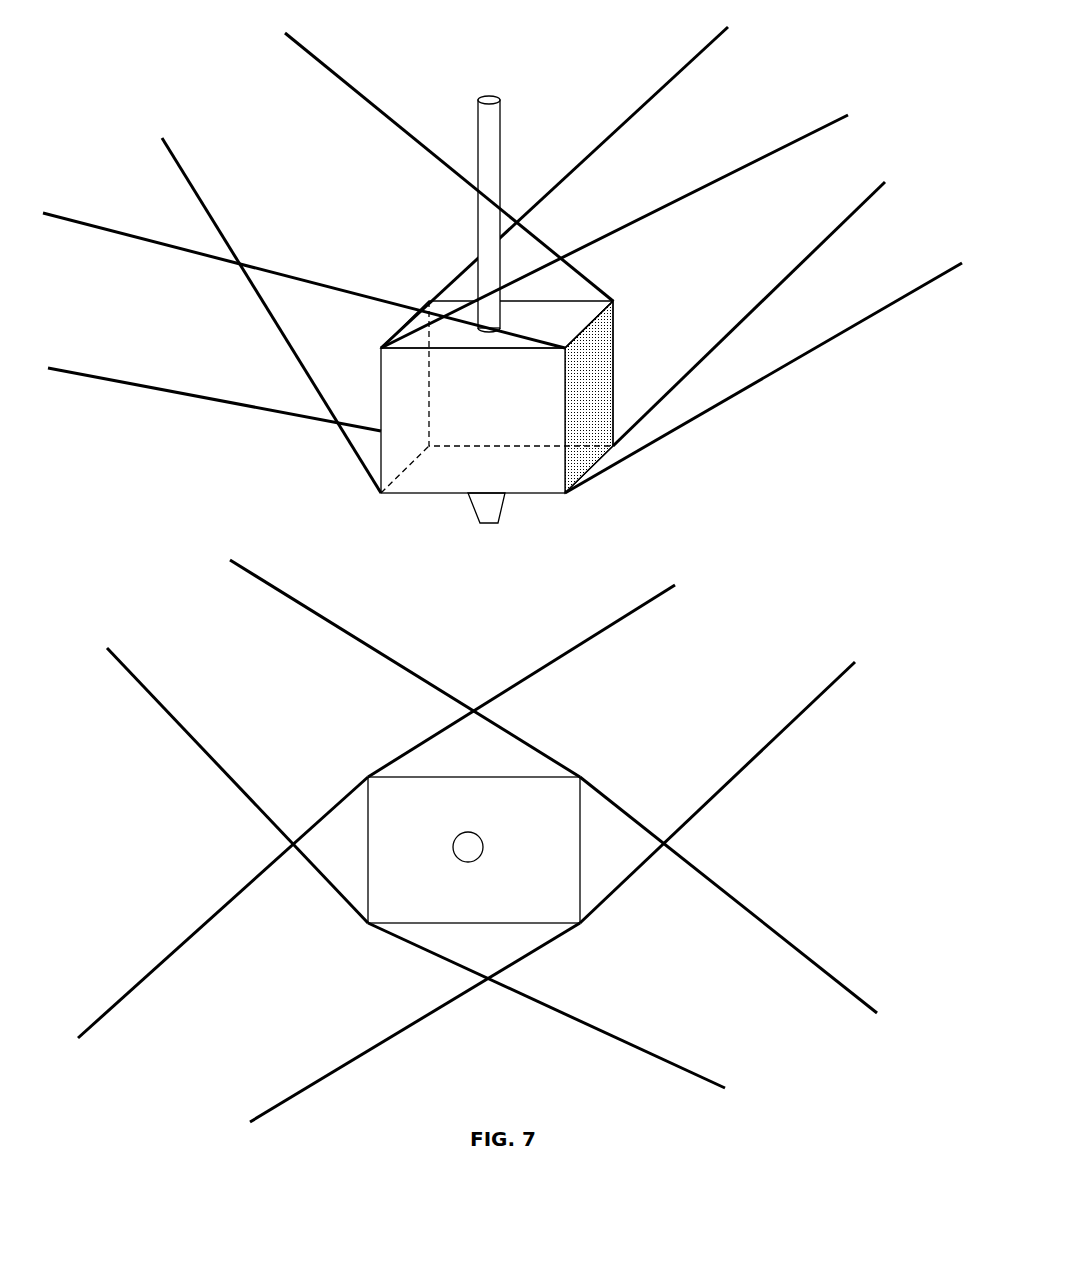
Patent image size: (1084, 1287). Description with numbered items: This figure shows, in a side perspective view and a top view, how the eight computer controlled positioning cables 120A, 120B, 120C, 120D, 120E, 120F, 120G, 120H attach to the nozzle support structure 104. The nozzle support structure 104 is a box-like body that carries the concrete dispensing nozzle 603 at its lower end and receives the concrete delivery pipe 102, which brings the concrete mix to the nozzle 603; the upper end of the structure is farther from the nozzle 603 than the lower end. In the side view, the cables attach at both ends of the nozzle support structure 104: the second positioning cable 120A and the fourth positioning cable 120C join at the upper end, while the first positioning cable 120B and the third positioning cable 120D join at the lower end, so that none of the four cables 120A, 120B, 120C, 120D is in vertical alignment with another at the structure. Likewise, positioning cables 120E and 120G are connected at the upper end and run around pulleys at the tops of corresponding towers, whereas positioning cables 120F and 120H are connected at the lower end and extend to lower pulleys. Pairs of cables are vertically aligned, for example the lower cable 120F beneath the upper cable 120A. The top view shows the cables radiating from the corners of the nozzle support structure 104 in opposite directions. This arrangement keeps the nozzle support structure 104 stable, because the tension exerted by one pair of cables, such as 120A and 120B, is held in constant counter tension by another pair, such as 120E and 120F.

The nozzle support structure 104 is at (185, 85).
The concrete delivery pipe 102 is at (506, 141).
The positioning cable 120A is at (323, 50).
The positioning cable 120B is at (200, 189).
The positioning cable 120C is at (655, 84).
The positioning cable 120D is at (850, 345).
The positioning cable 120E is at (707, 173).
The positioning cable 120F is at (760, 287).
The positioning cable 120G is at (128, 251).
The positioning cable 120H is at (195, 402).
The concrete dispensing nozzle 603 is at (487, 510).